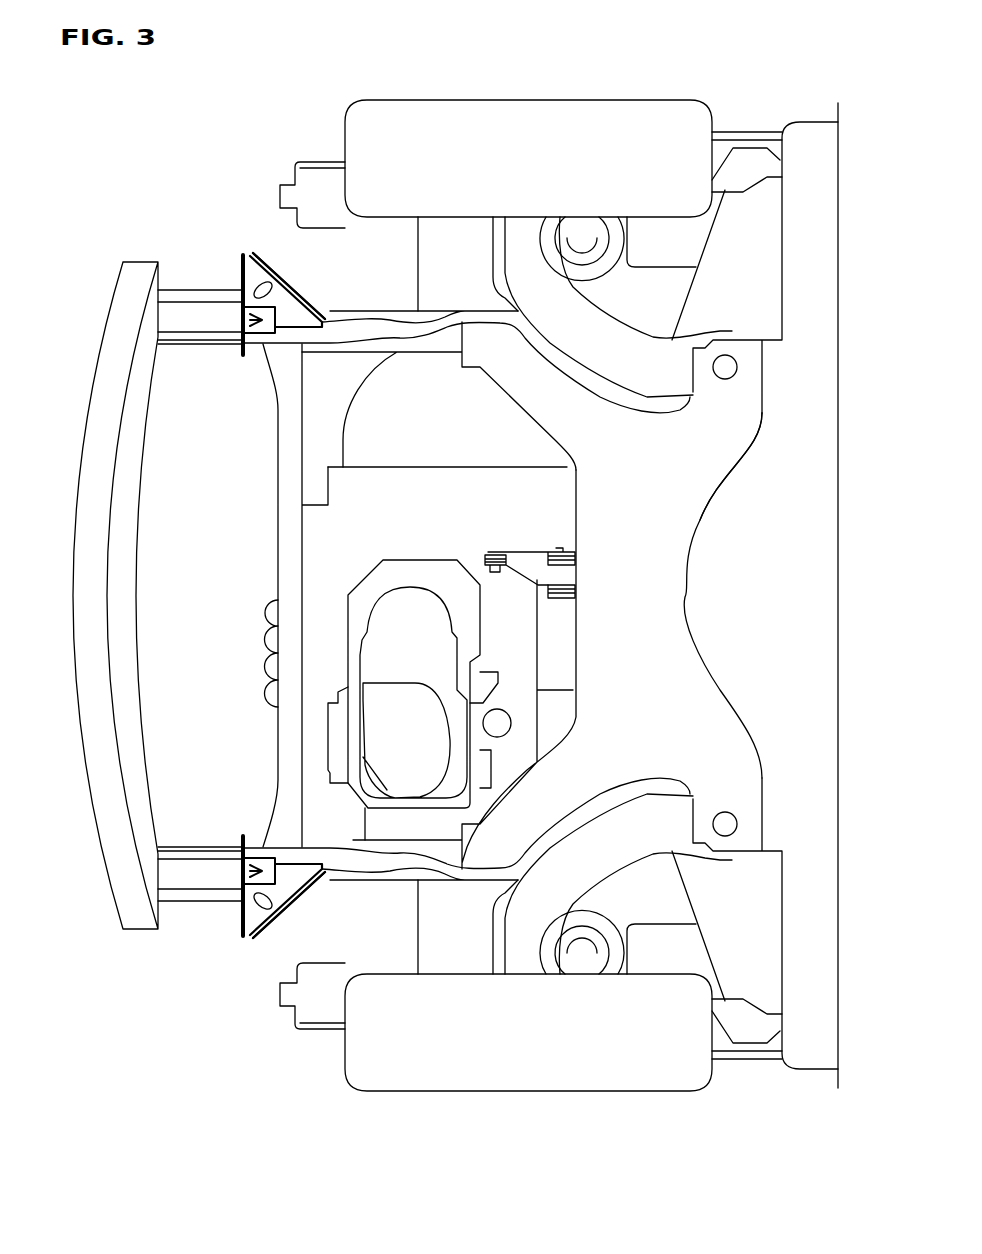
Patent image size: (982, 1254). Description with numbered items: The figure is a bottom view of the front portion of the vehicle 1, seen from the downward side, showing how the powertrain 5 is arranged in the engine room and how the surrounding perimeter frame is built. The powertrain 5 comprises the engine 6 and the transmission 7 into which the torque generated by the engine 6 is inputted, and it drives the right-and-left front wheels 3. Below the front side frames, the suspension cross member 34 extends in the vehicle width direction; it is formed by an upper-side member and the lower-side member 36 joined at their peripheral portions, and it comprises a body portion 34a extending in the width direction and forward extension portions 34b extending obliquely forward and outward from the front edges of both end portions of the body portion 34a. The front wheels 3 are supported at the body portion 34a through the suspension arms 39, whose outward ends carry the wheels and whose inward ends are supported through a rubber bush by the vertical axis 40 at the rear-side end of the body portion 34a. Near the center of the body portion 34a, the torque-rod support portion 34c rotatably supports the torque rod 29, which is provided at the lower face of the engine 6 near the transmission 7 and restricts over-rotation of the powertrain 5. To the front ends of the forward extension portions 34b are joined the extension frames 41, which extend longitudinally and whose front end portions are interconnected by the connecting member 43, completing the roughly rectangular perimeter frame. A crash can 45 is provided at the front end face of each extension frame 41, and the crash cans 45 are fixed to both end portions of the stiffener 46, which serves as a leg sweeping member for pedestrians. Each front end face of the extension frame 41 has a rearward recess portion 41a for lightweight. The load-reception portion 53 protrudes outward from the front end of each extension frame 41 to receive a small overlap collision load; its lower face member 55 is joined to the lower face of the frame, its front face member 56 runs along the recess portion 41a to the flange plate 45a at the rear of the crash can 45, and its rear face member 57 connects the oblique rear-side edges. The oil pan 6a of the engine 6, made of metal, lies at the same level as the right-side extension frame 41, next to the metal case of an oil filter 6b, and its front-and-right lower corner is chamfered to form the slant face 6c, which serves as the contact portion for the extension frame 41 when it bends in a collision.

The vehicle 1 is at (303, 120).
The front wheels 3 is at (608, 100).
The powertrain 5 is at (222, 427).
The engine 6 is at (323, 545).
The oil pan 6a is at (410, 558).
The metal case of an oil filter 6b is at (507, 705).
The slant face 6c is at (363, 808).
The transmission 7 is at (363, 425).
The torque rod 29 is at (528, 556).
The suspension cross member 34 is at (784, 415).
The body portion 34a is at (717, 486).
The forward extension portions 34b is at (527, 385).
The torque-rod support portion 34c is at (563, 615).
The lower-side member 36 is at (668, 611).
The suspension arms 39 is at (637, 338).
The axis 40 is at (738, 368).
The extension frames 41 is at (360, 330).
The recess portion 41a is at (245, 320).
The connecting member 43 is at (290, 737).
The crash can 45 is at (178, 300).
The flange plate 45a is at (238, 342).
The stiffener 46 is at (122, 300).
The load-reception portion 53 is at (268, 234).
The lower face member 55 is at (280, 302).
The front face member 56 is at (247, 253).
The rear face member 57 is at (283, 272).